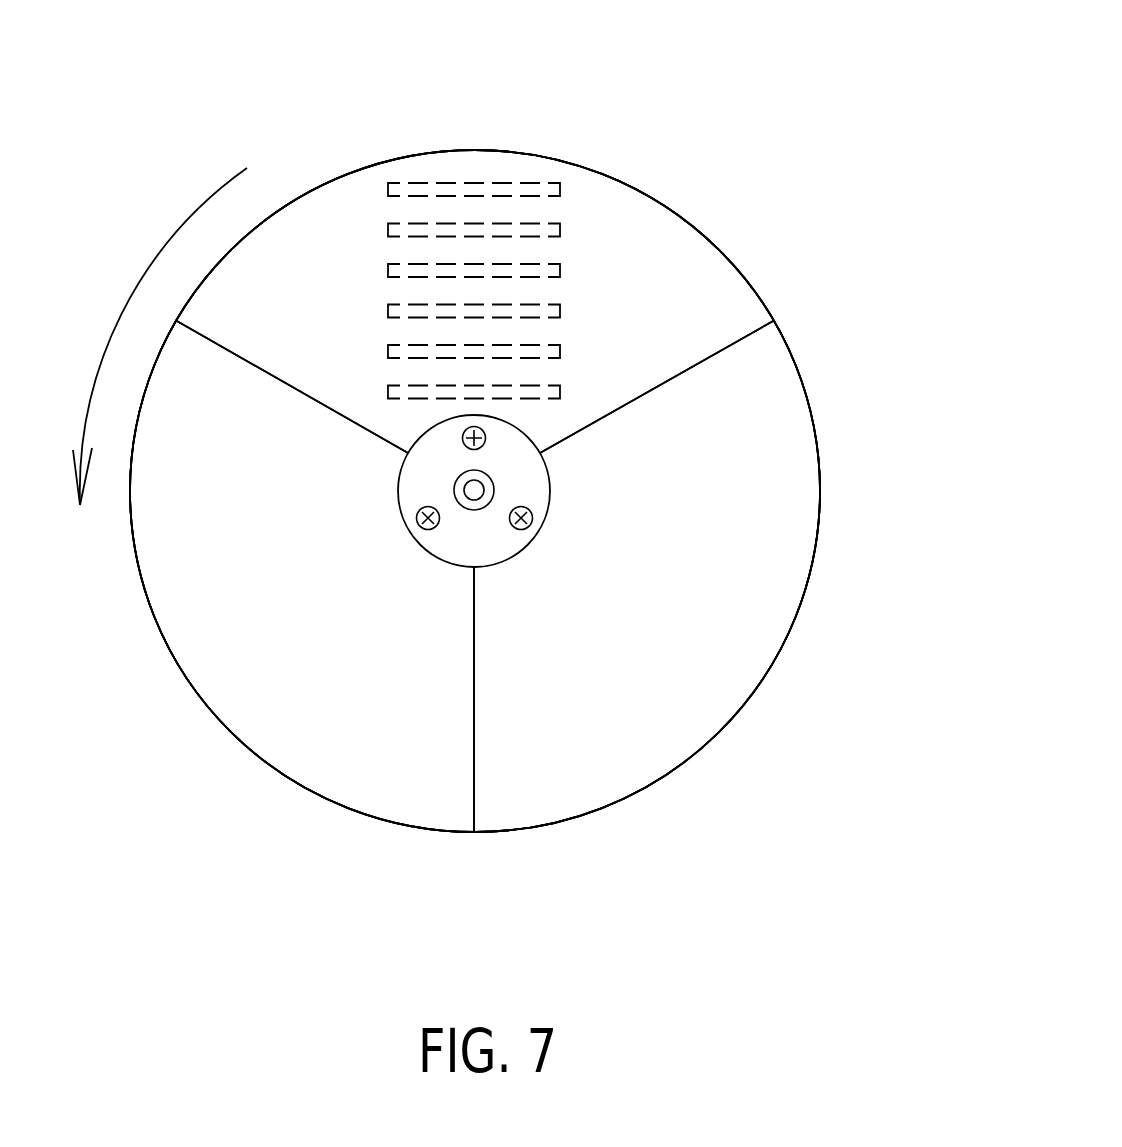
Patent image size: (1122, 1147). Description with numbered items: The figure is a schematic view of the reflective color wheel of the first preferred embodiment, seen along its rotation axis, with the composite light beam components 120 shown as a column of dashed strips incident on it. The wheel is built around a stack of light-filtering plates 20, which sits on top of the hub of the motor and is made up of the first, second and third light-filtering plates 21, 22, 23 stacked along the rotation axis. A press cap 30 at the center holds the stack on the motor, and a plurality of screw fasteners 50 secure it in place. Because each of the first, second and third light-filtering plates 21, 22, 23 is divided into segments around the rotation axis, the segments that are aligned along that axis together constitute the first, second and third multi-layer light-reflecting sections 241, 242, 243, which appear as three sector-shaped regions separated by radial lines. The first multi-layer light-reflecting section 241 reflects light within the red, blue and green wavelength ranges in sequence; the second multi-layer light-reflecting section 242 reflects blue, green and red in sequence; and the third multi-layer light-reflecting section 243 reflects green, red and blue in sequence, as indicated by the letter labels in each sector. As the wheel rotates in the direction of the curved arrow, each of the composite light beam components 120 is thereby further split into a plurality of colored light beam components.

The stack of light-filtering plates 20 is at (574, 125).
The first light-filtering plate 21 is at (692, 225).
The second light-filtering plate 22 is at (475, 491).
The third light-filtering plate 23 is at (475, 491).
The press cap 30 is at (450, 548).
The screw fasteners 50 is at (418, 522).
The composite light beam components 120 is at (422, 223).
The first multi-layer light-reflecting section 241 is at (622, 220).
The second multi-layer light-reflecting section 242 is at (637, 712).
The third multi-layer light-reflecting section 243 is at (220, 663).